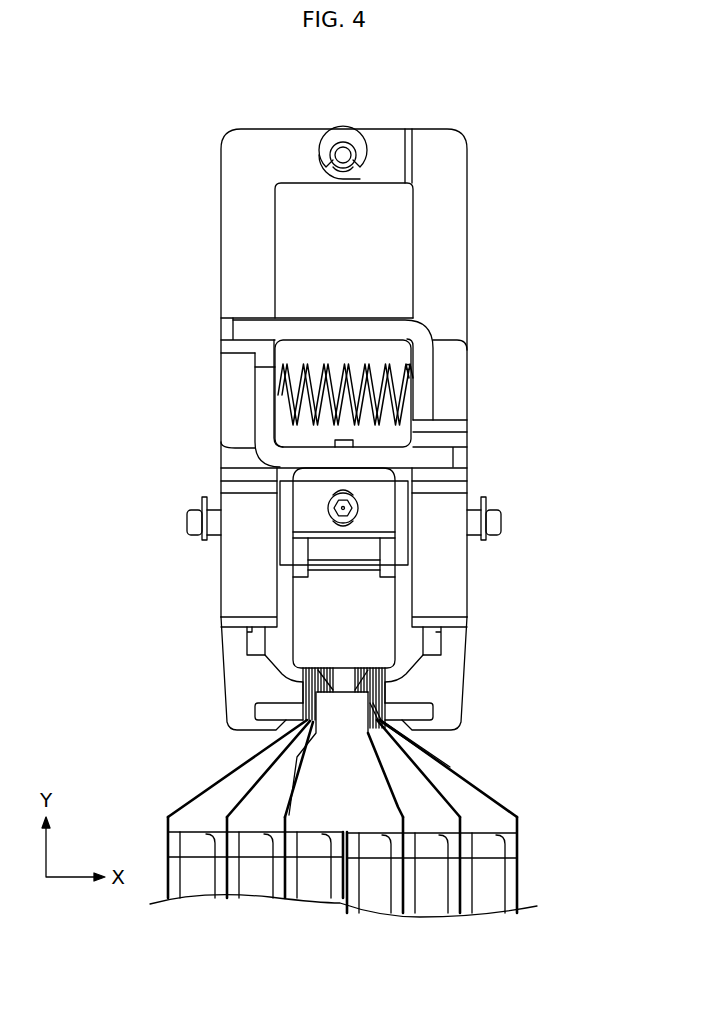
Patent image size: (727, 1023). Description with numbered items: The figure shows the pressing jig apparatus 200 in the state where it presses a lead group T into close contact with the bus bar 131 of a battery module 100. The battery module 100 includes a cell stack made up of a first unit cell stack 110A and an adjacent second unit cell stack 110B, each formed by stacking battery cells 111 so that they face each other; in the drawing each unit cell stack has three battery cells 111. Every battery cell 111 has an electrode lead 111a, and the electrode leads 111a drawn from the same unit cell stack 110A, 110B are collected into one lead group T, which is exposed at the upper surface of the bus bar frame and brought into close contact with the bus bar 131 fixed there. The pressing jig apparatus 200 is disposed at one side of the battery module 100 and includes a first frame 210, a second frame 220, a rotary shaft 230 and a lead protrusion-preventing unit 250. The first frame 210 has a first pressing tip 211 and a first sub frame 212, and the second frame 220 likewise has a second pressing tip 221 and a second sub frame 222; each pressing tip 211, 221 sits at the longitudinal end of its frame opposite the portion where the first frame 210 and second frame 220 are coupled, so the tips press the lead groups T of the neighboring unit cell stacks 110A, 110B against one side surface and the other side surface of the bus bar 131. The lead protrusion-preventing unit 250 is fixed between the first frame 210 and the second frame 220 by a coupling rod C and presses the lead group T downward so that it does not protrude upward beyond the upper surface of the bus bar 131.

The battery module 100 is at (388, 835).
The first unit cell stack 110A is at (258, 880).
The second unit cell stack 110B is at (347, 920).
The battery cell 111 is at (313, 848).
The electrode lead 111a is at (298, 772).
The bus bar 131 is at (345, 680).
The pressing jig apparatus 200 is at (498, 228).
The first frame 210 is at (221, 280).
The first pressing tip 211 is at (288, 680).
The first sub frame 212 is at (440, 390).
The second frame 220 is at (467, 280).
The second pressing tip 221 is at (398, 683).
The second sub frame 222 is at (263, 393).
The rotary shaft 230 is at (343, 148).
The lead protrusion-preventing unit 250 is at (362, 613).
The coupling rod C is at (472, 510).
The lead group T is at (317, 710).